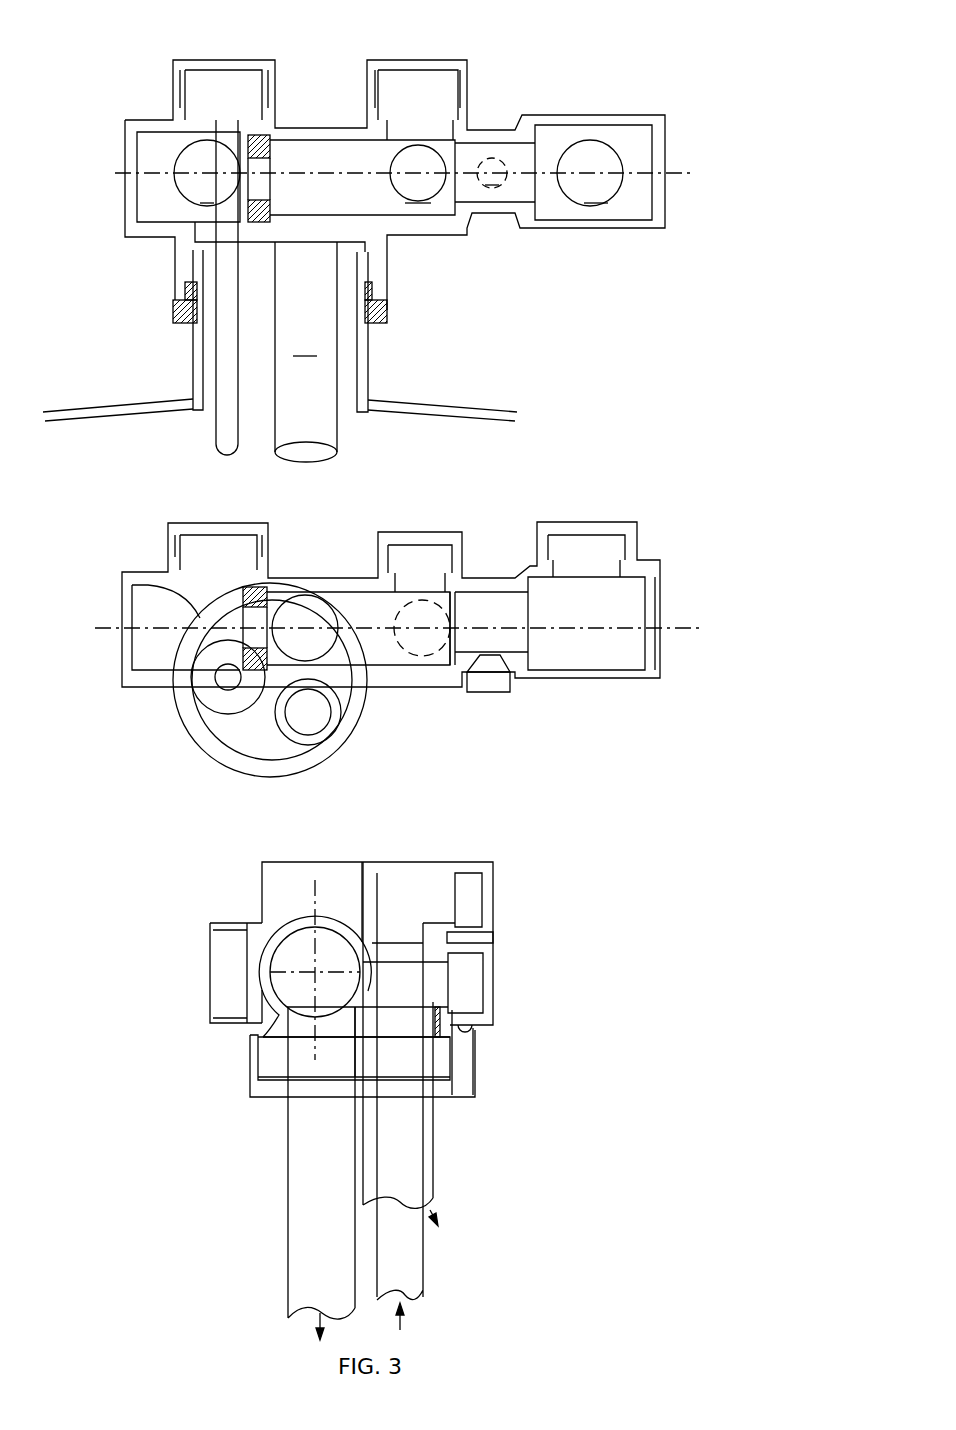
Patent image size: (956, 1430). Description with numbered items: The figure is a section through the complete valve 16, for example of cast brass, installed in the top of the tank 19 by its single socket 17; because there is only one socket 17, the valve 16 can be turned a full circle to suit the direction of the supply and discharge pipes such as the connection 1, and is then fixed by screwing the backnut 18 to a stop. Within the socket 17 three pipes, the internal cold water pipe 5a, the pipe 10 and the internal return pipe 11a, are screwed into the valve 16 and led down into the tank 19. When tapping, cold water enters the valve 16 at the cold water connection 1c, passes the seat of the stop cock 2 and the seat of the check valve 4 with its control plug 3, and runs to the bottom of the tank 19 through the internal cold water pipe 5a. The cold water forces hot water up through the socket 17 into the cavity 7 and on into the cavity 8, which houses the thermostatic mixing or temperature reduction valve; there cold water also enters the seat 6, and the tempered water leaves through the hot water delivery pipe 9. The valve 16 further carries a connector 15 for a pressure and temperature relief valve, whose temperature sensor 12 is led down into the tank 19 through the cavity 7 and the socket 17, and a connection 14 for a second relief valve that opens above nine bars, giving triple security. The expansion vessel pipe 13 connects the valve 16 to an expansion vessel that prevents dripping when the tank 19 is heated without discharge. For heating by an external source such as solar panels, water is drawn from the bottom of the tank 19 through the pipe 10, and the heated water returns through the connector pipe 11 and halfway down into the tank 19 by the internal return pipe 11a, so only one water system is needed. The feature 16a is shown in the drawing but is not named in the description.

The supply and discharge pipe connection 1 is at (583, 520).
The cold water connection 1c is at (593, 172).
The stop cock 2 is at (530, 640).
The control plug 3 is at (492, 693).
The check valve 4 is at (443, 660).
The internal cold water pipe 5a is at (306, 595).
The seat 6 is at (262, 175).
The cavity 7 is at (250, 250).
The cavity 8 is at (122, 585).
The hot water delivery pipe 9 is at (200, 528).
The pipe 10 is at (330, 712).
The connector pipe 11 is at (510, 972).
The internal return pipe 11a is at (312, 727).
The temperature sensor 12 is at (216, 418).
The expansion vessel pipe 13 is at (420, 522).
The relief valve connection 14 is at (418, 62).
The connector 15 is at (218, 98).
The valve 16 is at (122, 72).
The tube holder 16a is at (385, 258).
The socket 17 is at (370, 346).
The backnut 18 is at (385, 313).
The tank 19 is at (483, 410).